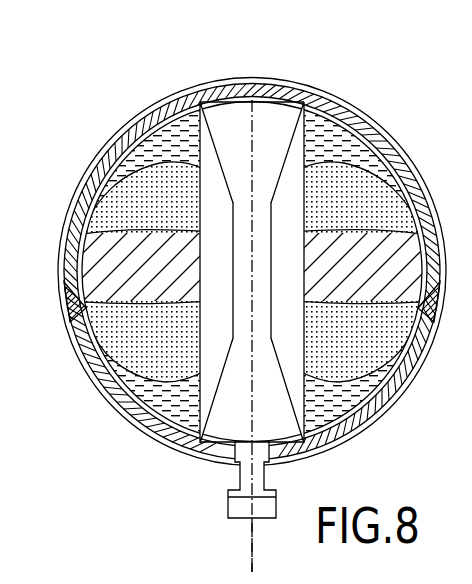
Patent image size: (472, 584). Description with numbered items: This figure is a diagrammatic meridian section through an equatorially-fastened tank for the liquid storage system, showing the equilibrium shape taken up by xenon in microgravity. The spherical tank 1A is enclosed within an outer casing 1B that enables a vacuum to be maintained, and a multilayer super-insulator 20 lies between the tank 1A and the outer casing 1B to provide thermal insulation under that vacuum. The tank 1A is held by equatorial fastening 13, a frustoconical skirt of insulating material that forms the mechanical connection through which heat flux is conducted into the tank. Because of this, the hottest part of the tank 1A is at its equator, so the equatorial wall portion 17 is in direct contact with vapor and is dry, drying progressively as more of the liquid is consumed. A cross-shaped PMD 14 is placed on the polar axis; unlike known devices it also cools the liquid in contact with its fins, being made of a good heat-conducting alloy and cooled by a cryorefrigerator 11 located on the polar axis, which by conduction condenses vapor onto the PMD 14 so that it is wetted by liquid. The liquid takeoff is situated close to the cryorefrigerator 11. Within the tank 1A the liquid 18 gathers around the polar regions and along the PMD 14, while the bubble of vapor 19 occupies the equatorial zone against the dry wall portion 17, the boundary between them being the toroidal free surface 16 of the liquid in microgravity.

The tank 1A is at (181, 93).
The outer casing 1B is at (237, 77).
The cryorefrigerator 11 is at (242, 515).
The frustoconical skirt 13 is at (63, 288).
The PMD 14 is at (249, 366).
The free surface of the liquid 16 is at (163, 162).
The wall portion 17 is at (140, 237).
The liquid 18 is at (178, 402).
The bubble of vapor 19 is at (138, 178).
The multilayer super-insulator 20 is at (107, 390).